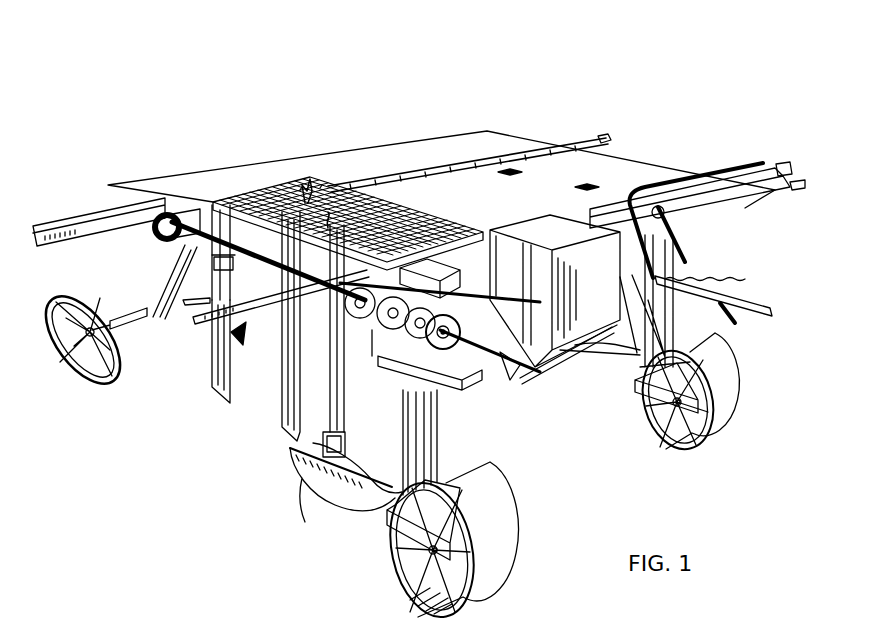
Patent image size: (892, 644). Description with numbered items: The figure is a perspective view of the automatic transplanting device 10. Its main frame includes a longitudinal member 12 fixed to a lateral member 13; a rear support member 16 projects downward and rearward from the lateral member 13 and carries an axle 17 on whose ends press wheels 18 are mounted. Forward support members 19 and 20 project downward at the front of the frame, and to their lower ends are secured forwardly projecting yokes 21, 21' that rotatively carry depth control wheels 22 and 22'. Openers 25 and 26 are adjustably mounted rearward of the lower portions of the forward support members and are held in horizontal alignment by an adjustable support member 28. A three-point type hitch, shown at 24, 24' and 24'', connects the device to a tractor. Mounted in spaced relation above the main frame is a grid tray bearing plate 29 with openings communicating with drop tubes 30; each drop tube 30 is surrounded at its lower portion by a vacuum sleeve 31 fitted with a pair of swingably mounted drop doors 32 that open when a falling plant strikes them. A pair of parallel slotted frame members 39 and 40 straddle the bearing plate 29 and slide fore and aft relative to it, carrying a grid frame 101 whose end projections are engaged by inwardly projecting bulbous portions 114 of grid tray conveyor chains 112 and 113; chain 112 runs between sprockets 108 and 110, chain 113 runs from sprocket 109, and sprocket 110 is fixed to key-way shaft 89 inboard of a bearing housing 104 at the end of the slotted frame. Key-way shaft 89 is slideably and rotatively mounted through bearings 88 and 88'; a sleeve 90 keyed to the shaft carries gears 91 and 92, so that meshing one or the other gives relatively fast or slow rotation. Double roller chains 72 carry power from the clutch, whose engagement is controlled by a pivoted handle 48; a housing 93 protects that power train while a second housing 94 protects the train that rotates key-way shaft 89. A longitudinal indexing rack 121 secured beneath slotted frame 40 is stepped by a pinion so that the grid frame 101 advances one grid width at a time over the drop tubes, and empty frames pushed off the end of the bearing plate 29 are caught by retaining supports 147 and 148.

The transplanting device 10 is at (510, 116).
The grid tray bearing plate 29 is at (258, 182).
The slotted frame member 39 is at (380, 170).
The sprocket 108 is at (608, 140).
The grid tray conveyor chain 112 is at (450, 170).
The bulbous portions 114 is at (585, 180).
The retaining support 147 is at (78, 218).
The sprocket 110 is at (156, 234).
The lateral member 13 is at (168, 244).
The drop tube 30 is at (284, 260).
The grid frame 101 is at (460, 226).
The longitudinal member 12 is at (292, 262).
The vacuum sleeve 31 is at (276, 370).
The drop doors 32 is at (288, 400).
The press wheels 18 is at (110, 372).
The rear support member 16 is at (170, 284).
The axle 17 is at (152, 318).
The retaining support 148 is at (198, 322).
The bearing housing 104 is at (333, 320).
The adjustable support member 28 is at (345, 440).
The second housing 94 is at (432, 271).
The double roller chain 72 is at (498, 300).
The bearing 88 is at (377, 319).
The sleeve 90 is at (420, 340).
The bearing 88' is at (457, 340).
The gear 91 is at (390, 348).
The gear 92 is at (398, 372).
The key-way shaft 89 is at (512, 360).
The forward support member 20 is at (440, 433).
The opener 26 is at (330, 503).
The wheel bracket 21' is at (413, 534).
The depth control wheel 22' is at (467, 543).
The housing 93 is at (522, 226).
The three-point hitch 24'' is at (567, 370).
The opener 25 is at (634, 370).
The forward support member 19 is at (672, 298).
The wheel bracket 21 is at (650, 393).
The depth control wheel 22 is at (701, 395).
The slotted frame member 40 is at (758, 203).
The second grid conveyor chain 113 is at (782, 168).
The sprocket 109 is at (806, 183).
The pivoted handle 48 is at (655, 184).
The three-point hitch 24' is at (688, 234).
The longitudinal indexing rack 121 is at (745, 296).
The three-point hitch 24 is at (747, 319).